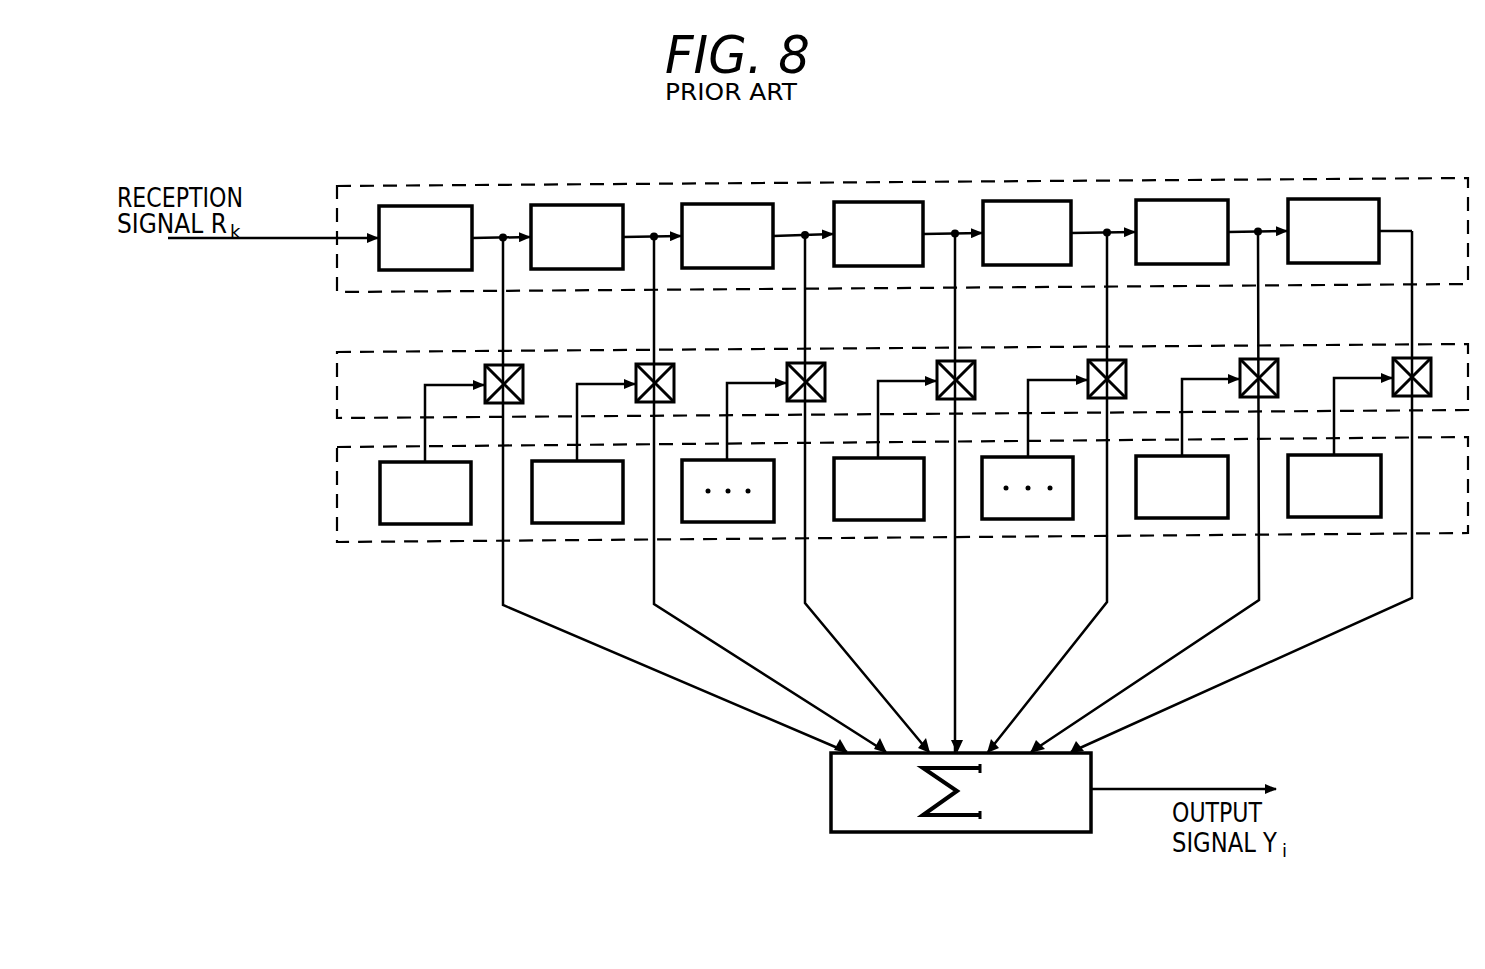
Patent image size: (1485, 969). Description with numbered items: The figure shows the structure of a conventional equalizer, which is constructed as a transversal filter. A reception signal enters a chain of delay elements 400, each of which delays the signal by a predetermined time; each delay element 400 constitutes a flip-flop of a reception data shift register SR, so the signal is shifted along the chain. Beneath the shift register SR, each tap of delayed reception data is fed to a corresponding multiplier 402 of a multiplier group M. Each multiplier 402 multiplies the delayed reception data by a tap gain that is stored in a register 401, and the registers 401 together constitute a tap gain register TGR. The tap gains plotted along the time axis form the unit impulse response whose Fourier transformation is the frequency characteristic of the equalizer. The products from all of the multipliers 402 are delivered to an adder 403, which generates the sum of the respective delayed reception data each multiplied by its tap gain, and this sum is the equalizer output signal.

The delay element 400 is at (452, 206).
The register 401 is at (418, 525).
The multiplier 402 is at (490, 364).
The adder 403 is at (831, 810).
The reception data shift register SR is at (1133, 178).
The multiplier group M is at (337, 396).
The tap gain register TGR is at (337, 510).